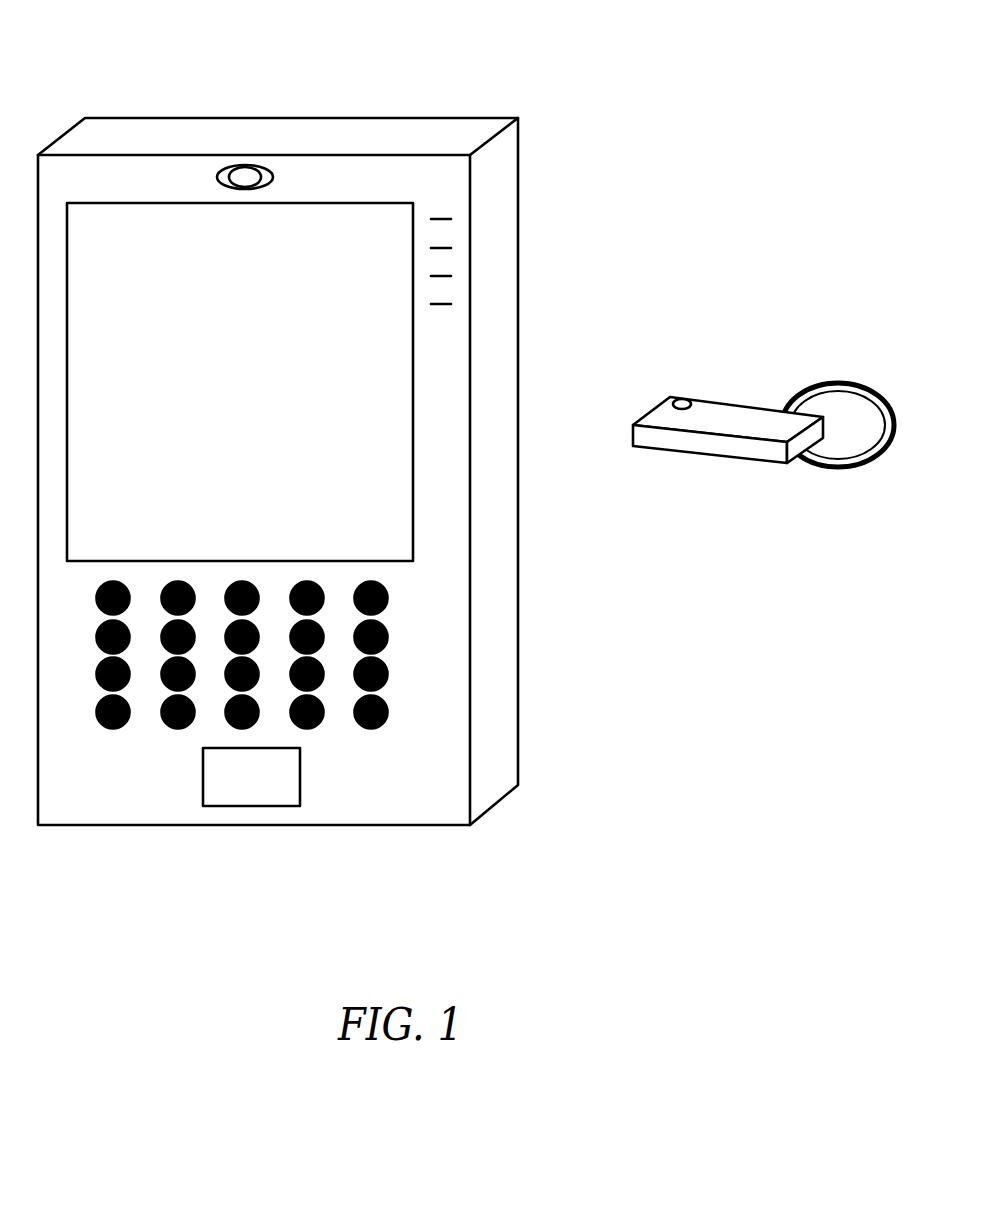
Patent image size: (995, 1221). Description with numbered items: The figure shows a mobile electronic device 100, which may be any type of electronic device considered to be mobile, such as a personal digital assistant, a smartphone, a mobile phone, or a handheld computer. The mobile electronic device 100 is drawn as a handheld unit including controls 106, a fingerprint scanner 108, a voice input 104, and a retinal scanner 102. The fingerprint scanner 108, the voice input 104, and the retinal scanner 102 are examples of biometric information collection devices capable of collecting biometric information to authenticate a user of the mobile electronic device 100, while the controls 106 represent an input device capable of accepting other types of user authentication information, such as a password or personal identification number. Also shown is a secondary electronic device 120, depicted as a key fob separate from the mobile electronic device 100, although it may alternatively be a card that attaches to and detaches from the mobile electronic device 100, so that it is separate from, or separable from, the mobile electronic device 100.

The mobile electronic device 100 is at (148, 118).
The retinal scanner 102 is at (268, 165).
The voice input 104 is at (433, 306).
The controls 106 is at (98, 712).
The fingerprint scanner 108 is at (300, 766).
The secondary electronic device 120 is at (730, 507).